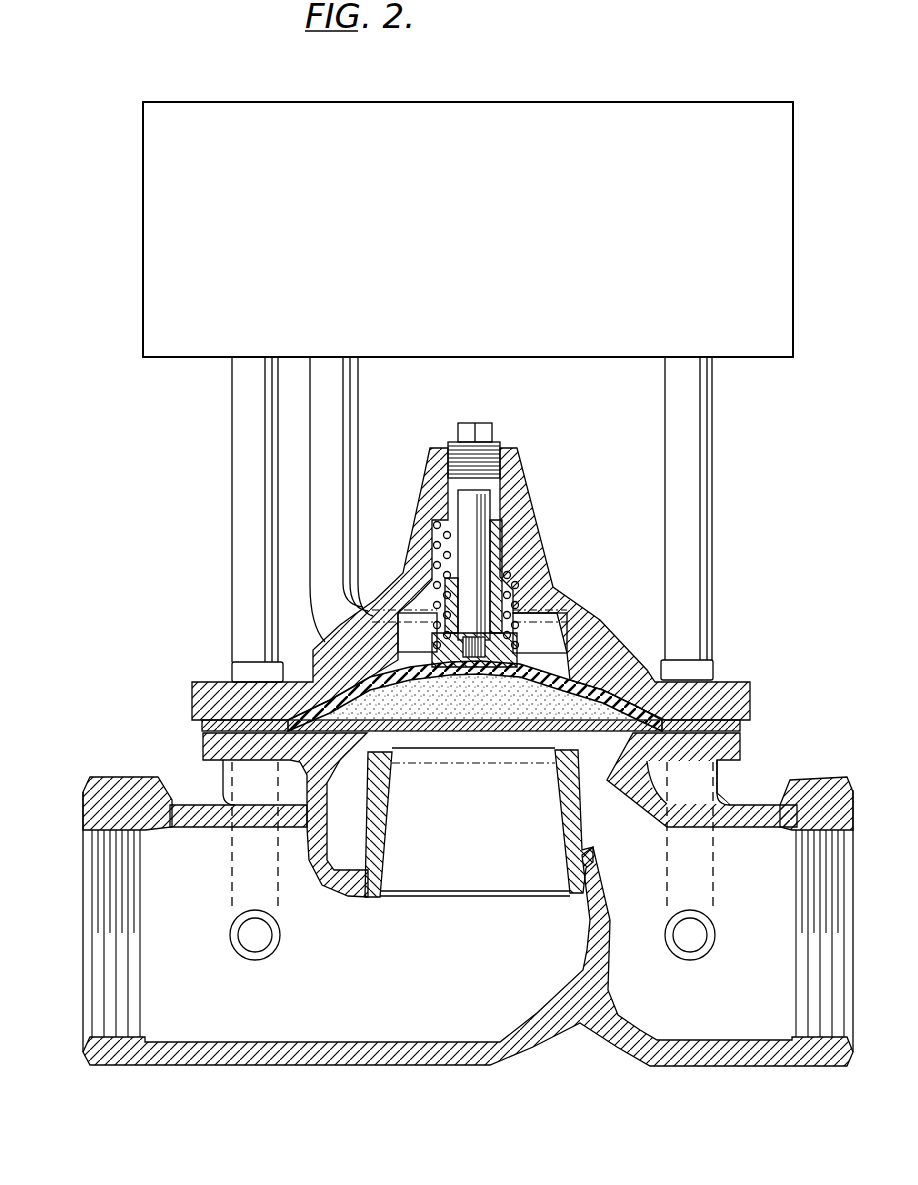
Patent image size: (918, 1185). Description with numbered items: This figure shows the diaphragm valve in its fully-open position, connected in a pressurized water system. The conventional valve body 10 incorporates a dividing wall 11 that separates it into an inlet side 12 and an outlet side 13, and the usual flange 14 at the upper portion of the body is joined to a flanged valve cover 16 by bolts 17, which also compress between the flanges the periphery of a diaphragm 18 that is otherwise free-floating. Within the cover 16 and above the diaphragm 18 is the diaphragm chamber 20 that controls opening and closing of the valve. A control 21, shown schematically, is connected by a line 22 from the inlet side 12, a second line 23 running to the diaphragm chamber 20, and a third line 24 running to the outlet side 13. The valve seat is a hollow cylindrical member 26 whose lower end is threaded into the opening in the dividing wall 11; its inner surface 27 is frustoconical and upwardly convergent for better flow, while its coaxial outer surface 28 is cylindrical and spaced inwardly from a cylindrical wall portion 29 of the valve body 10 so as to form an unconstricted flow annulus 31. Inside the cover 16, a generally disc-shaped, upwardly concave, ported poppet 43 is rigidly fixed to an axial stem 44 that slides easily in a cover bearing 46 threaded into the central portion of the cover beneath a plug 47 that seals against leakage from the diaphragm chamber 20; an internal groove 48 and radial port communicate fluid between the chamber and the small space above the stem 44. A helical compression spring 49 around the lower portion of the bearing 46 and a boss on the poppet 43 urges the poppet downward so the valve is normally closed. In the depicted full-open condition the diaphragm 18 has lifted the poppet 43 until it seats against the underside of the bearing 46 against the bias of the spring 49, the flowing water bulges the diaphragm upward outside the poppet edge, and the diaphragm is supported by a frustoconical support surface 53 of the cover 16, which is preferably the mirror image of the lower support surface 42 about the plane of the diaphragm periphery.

The valve body 10 is at (378, 1095).
The dividing wall 11 is at (325, 881).
The inlet side 12 is at (252, 994).
The outlet side 13 is at (735, 990).
The flange 14 is at (740, 752).
The valve cover 16 is at (604, 620).
The bolts 17 is at (232, 667).
The diaphragm 18 is at (338, 728).
The diaphragm chamber 20 is at (540, 630).
The control 21 is at (143, 176).
The line 22 is at (232, 408).
The second line 23 is at (352, 404).
The third line 24 is at (712, 431).
The hollow cylindrical member 26 is at (392, 806).
The inner surface 27 is at (560, 821).
The outer surface 28 is at (581, 829).
The cylindrical wall portion 29 is at (588, 786).
The flow annulus 31 is at (353, 783).
The lower support surface 42 is at (632, 749).
The poppet 43 is at (568, 678).
The axial stem 44 is at (475, 525).
The cover bearing 46 is at (503, 553).
The plug 47 is at (492, 433).
The internal groove 48 is at (432, 525).
The helical compression spring 49 is at (513, 593).
The frustoconical support surface 53 is at (620, 662).